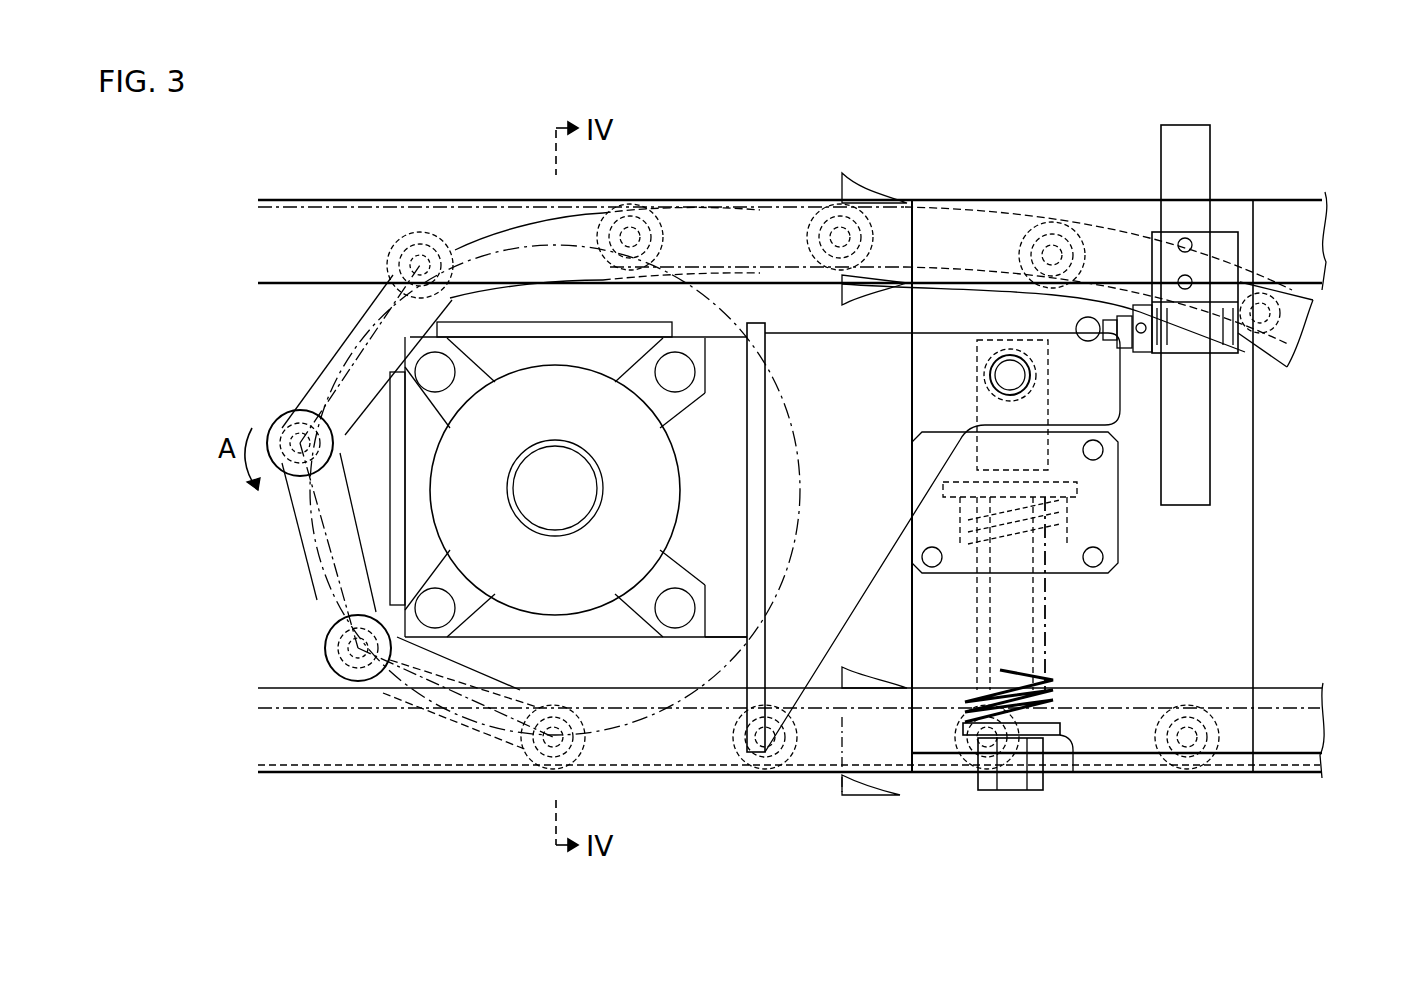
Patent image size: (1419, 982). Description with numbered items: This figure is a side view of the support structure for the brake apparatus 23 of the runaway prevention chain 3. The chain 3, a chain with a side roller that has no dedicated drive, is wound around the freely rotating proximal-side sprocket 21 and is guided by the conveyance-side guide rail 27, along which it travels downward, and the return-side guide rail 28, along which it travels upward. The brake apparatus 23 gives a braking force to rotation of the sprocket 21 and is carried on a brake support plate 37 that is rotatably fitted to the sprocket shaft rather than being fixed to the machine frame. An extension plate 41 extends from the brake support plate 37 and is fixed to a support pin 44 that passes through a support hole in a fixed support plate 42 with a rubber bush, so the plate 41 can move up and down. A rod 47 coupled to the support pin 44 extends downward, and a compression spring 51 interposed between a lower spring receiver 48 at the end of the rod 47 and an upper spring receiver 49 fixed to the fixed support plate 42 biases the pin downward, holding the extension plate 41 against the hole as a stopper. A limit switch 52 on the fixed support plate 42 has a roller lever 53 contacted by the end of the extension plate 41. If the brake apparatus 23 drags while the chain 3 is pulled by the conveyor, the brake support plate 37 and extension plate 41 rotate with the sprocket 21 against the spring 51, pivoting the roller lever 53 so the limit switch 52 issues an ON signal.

The runaway prevention chain 3 is at (353, 323).
The proximal-side sprocket 21 is at (736, 322).
The brake apparatus 23 is at (447, 512).
The conveyance-side guide rail 27 is at (1283, 775).
The return-side guide rail 28 is at (1300, 282).
The brake support plate 37 is at (738, 612).
The extension plate 41 is at (945, 335).
The fixed support plate 42 is at (1240, 452).
The support pin 44 is at (1010, 362).
The rod 47 is at (1048, 600).
The lower spring receiver 48 is at (1052, 745).
The upper spring receiver 49 is at (1120, 532).
The compression spring 51 is at (1053, 680).
The limit switch 52 is at (1185, 338).
The roller lever 53 is at (1108, 316).